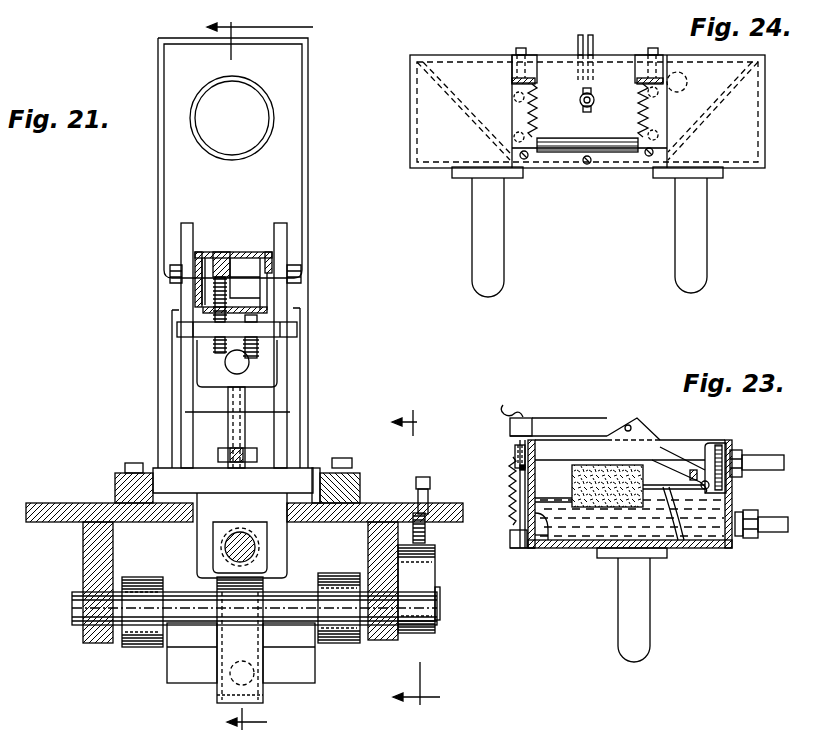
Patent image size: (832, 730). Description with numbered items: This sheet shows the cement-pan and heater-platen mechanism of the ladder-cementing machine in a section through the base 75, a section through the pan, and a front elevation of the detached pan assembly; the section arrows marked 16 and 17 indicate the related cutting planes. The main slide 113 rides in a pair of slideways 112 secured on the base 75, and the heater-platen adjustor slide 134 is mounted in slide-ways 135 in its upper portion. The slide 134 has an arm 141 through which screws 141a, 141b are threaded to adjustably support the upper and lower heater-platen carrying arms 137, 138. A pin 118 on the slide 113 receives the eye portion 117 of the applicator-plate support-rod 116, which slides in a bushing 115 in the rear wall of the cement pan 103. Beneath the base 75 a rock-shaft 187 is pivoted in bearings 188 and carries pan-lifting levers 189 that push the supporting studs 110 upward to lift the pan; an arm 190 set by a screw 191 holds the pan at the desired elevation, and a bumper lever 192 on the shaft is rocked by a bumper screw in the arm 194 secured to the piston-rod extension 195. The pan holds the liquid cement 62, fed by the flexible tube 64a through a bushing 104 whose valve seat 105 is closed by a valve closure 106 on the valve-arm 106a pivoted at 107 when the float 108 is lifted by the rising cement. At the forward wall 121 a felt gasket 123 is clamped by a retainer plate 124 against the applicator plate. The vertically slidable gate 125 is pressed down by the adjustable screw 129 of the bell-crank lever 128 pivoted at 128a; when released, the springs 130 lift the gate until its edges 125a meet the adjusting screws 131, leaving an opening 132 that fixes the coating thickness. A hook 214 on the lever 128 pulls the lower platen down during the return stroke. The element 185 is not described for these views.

In FIG. 21, the section line 16- 16 is at (274, 375).
In FIG. 21, the section line 17- 17 is at (430, 559).
In FIG. 21, the guide plate 185 is at (298, 180).
In FIG. 21, the main slide 113 is at (312, 437).
In FIG. 21, the upper heater-platen carrying arm 137 is at (237, 252).
In FIG. 21, the lower heater-platen carrying arm 138 is at (205, 305).
In FIG. 21, the heater-platen adjustor slide 134 is at (283, 303).
In FIG. 21, the screw 141a is at (218, 289).
In FIG. 21, the slide-ways 135 is at (298, 328).
In FIG. 21, the arm 141 is at (210, 336).
In FIG. 21, the screw 141b is at (258, 345).
In FIG. 21, the pin 118 is at (233, 430).
In FIG. 21, the eye portion 117 is at (280, 433).
In FIG. 21, the slideways 112 is at (112, 486).
In FIG. 21, the base 75 is at (55, 482).
In FIG. 23, the base 75 is at (563, 729).
In FIG. 21, the piston-rod extension 195 is at (262, 517).
In FIG. 21, the bearings 188 is at (83, 557).
In FIG. 21, the rock-shaft 187 is at (72, 612).
In FIG. 21, the pan-lifting levers 189 is at (142, 648).
In FIG. 21, the arm 194 is at (217, 690).
In FIG. 21, the bumper lever 192 is at (258, 685).
In FIG. 21, the arm 190 is at (437, 555).
In FIG. 21, the screw 191 is at (430, 478).
In FIG. 24, the cement pan 103 is at (410, 122).
In FIG. 24, the opening 132 is at (560, 146).
In FIG. 24, the adjusting screws 131 is at (517, 55).
In FIG. 23, the adjusting screws 131 is at (515, 448).
In FIG. 24, the edges 125a is at (512, 81).
In FIG. 24, the springs 130 is at (539, 101).
In FIG. 23, the springs 130 is at (510, 483).
In FIG. 24, the gate 125 is at (613, 62).
In FIG. 23, the gate 125 is at (520, 505).
In FIG. 24, the retainer plate 124 is at (627, 162).
In FIG. 23, the retainer plate 124 is at (520, 549).
In FIG. 24, the supporting studs 110 is at (500, 256).
In FIG. 23, the supporting studs 110 is at (622, 618).
In FIG. 23, the float 108 is at (605, 507).
In FIG. 23, the bell-crank lever 128 is at (575, 425).
In FIG. 23, the adjustable screw 129 is at (520, 418).
In FIG. 23, the pivot 128a is at (628, 425).
In FIG. 23, the hook 214 is at (503, 406).
In FIG. 23, the liquid cement 62 is at (552, 499).
In FIG. 23, the valve closure 106 is at (695, 460).
In FIG. 23, the bushing 104 is at (717, 443).
In FIG. 23, the valve seat 105 is at (713, 445).
In FIG. 23, the pivot 107 is at (730, 497).
In FIG. 23, the flexible tube 64a is at (770, 456).
In FIG. 23, the applicator-plate support-rod 116 is at (785, 533).
In FIG. 23, the bushing 115 is at (745, 540).
In FIG. 23, the valve-arm 106a is at (687, 546).
In FIG. 23, the felt gasket 123 is at (528, 550).
In FIG. 23, the forward wall 121 is at (537, 548).